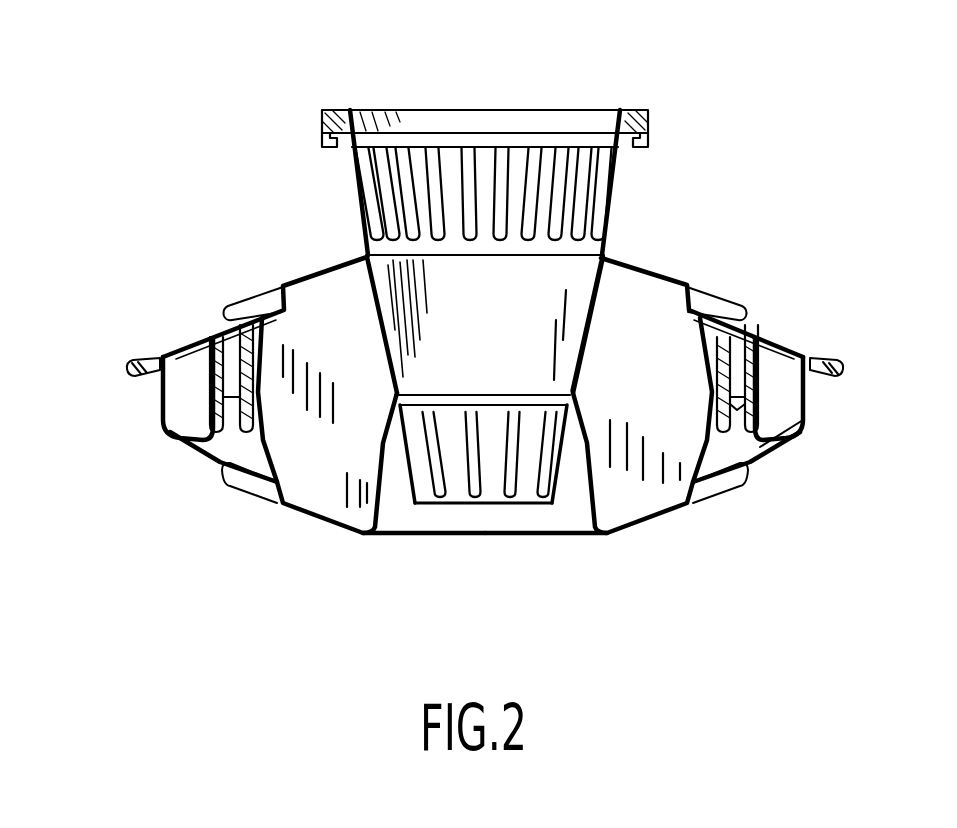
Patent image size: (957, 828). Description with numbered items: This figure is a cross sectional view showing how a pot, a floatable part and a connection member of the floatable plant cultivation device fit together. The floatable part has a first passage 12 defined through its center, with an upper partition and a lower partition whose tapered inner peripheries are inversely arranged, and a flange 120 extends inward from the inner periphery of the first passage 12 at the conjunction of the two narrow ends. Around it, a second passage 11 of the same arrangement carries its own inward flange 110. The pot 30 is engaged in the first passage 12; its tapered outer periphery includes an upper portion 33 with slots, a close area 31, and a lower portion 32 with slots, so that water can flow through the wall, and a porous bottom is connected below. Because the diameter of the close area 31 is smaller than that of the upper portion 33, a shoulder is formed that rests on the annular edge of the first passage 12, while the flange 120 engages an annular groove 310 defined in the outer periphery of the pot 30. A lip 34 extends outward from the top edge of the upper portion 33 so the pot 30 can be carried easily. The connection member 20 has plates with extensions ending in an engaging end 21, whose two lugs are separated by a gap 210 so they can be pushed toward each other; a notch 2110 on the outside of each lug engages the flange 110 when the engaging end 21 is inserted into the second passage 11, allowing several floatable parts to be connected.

The second passage 11 is at (797, 353).
The first passage 12 is at (597, 317).
The flange 110 is at (759, 397).
The flange 120 is at (574, 392).
The connection member 20 is at (757, 330).
The engaging end 21 is at (760, 438).
The gap 210 is at (735, 420).
The notch 2110 is at (760, 377).
The pot 30 is at (561, 316).
The close area 31 is at (597, 283).
The lower portion 32 is at (563, 540).
The upper portion 33 is at (617, 183).
The lip 34 is at (640, 110).
The annular groove 310 is at (557, 385).